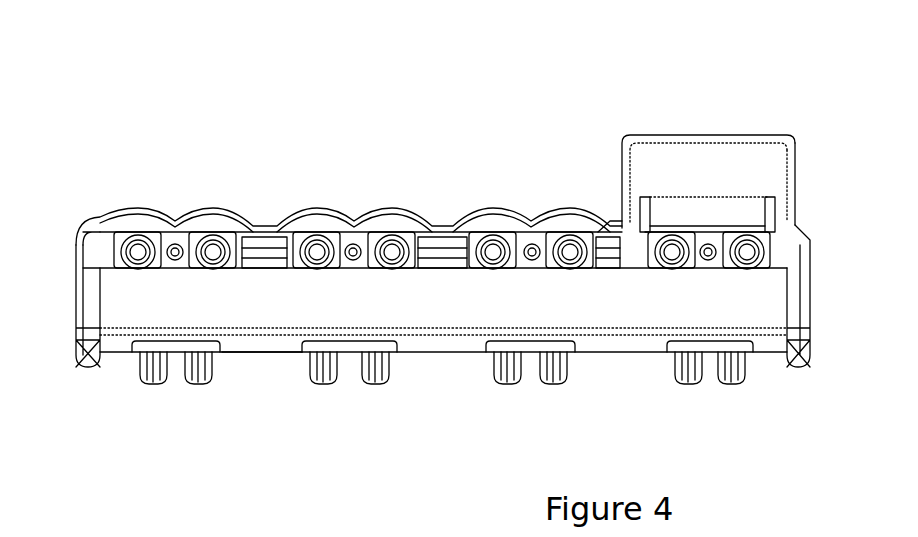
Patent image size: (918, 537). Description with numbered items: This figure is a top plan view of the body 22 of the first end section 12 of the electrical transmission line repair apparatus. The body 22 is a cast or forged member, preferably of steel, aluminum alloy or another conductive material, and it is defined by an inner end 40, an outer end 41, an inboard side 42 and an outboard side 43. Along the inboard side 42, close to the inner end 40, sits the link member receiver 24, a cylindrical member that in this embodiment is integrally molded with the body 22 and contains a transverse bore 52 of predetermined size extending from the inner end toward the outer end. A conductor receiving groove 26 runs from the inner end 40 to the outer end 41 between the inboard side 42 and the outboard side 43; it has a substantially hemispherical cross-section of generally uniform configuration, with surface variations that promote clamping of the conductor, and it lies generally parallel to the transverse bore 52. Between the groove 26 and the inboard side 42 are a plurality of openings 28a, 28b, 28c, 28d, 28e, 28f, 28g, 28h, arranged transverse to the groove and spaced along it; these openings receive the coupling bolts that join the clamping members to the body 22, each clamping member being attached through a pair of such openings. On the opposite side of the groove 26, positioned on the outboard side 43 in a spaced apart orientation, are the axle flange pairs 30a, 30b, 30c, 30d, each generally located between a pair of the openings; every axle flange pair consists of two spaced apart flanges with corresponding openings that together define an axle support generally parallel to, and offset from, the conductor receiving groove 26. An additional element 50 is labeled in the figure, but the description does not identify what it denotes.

The first end section 12 is at (405, 88).
The body 22 is at (430, 431).
The link member receiver 24 is at (770, 127).
The conductor receiving groove 26 is at (748, 322).
The opening 28a is at (747, 224).
The opening 28b is at (666, 224).
The opening 28c is at (570, 224).
The opening 28d is at (493, 224).
The opening 28e is at (392, 224).
The opening 28f is at (317, 224).
The opening 28g is at (213, 224).
The opening 28h is at (138, 224).
The axle flange pair 30a is at (705, 414).
The axle flange pair 30b is at (535, 402).
The axle flange pair 30c is at (358, 402).
The axle flange pair 30d is at (173, 402).
The inner end 40 is at (821, 300).
The outer end 41 is at (74, 300).
The inboard side 42 is at (450, 207).
The outboard side 43 is at (263, 357).
The top wall of upper housing 50 is at (660, 127).
The transverse bore 52 is at (806, 159).